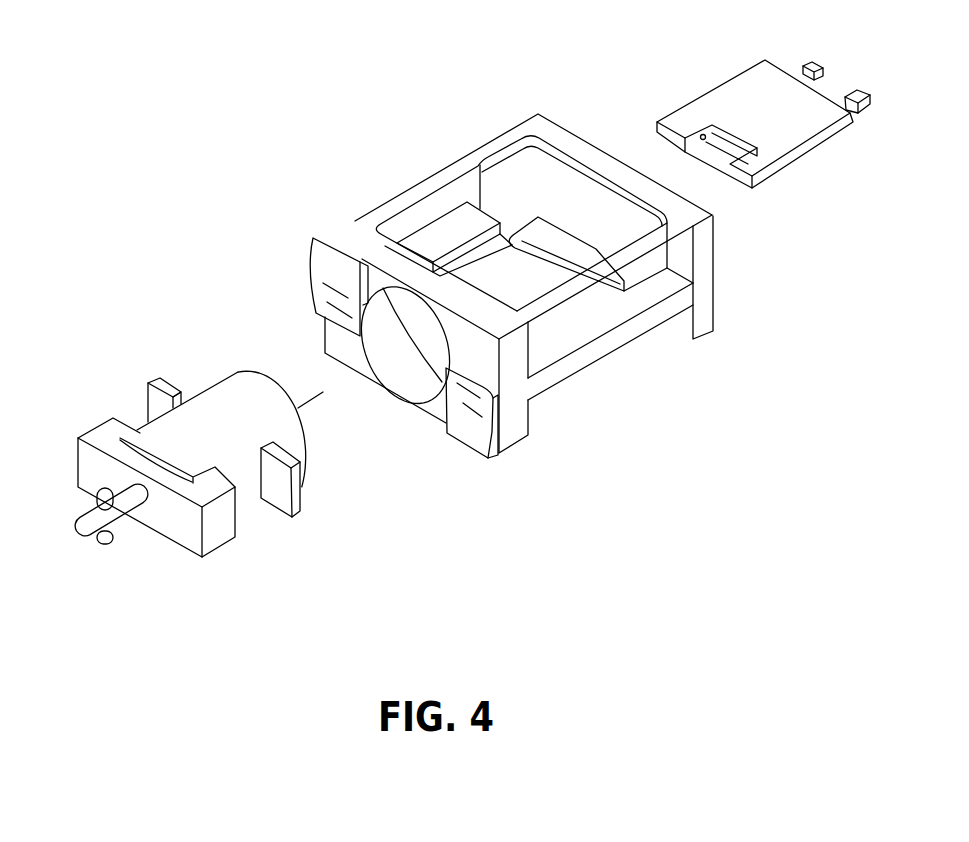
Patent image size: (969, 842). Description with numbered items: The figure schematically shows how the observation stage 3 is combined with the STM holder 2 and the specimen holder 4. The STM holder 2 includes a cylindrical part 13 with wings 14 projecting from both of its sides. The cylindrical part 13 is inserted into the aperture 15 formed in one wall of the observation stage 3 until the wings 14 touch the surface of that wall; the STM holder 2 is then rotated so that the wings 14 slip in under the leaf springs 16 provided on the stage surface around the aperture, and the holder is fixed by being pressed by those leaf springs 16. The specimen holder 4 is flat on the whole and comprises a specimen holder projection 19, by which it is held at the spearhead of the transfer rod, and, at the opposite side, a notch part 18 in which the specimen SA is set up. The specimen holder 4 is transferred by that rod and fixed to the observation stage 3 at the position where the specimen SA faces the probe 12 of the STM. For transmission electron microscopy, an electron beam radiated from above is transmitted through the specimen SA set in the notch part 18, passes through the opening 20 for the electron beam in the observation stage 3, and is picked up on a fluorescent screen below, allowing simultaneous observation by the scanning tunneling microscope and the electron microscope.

The STM holder 2 is at (139, 535).
The observation stage 3 is at (451, 170).
The specimen holder 4 is at (720, 103).
The probe 12 is at (306, 395).
The cylindrical part 13 is at (208, 420).
The wings 14 is at (263, 471).
The aperture 15 is at (398, 404).
The leaf springs 16 is at (457, 413).
The notch part 18 is at (725, 164).
The specimen holder projection 19 is at (860, 84).
The opening for an electron beam 20 is at (527, 283).
The specimen SA is at (718, 160).